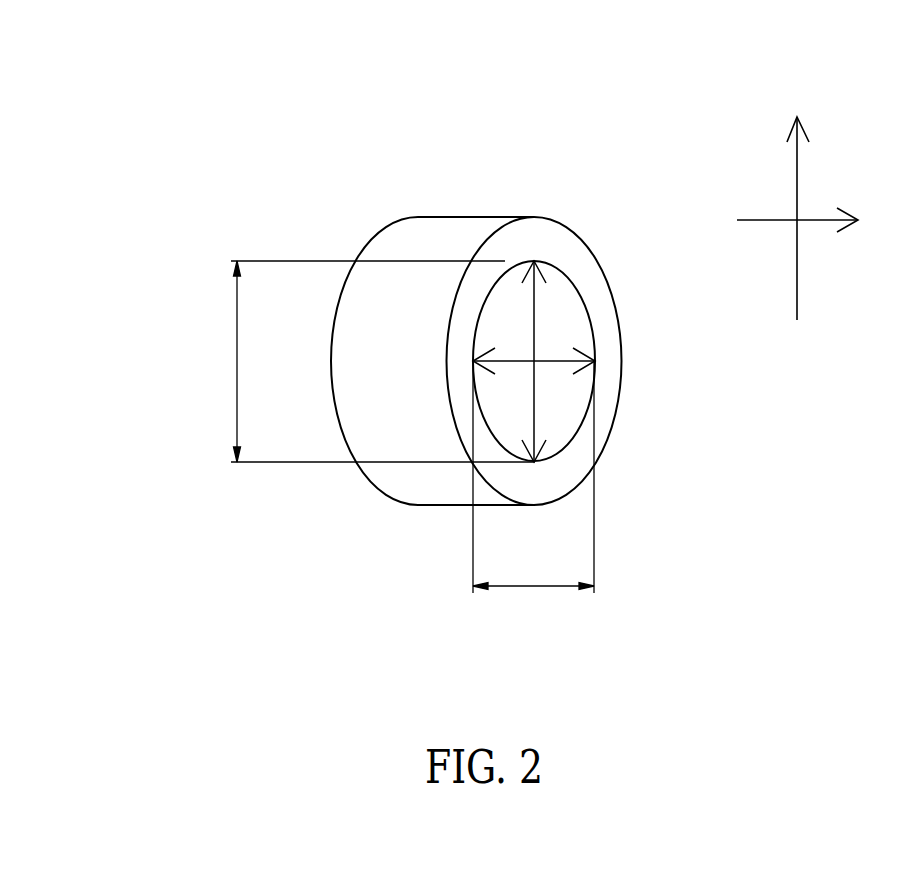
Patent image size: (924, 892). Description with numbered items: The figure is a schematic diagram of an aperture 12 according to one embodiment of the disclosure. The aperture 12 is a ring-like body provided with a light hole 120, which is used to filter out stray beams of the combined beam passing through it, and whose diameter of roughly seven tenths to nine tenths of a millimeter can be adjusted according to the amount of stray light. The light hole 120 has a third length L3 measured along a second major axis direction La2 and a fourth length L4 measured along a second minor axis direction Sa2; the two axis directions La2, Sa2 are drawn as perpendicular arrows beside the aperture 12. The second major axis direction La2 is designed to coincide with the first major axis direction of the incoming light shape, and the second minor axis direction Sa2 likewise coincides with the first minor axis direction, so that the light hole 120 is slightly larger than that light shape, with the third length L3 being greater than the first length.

The aperture 12 is at (345, 442).
The light hole 120 is at (508, 263).
The third length L3 is at (366, 361).
The fourth length L4 is at (533, 477).
The second major axis direction La2 is at (802, 203).
The second minor axis direction Sa2 is at (824, 223).